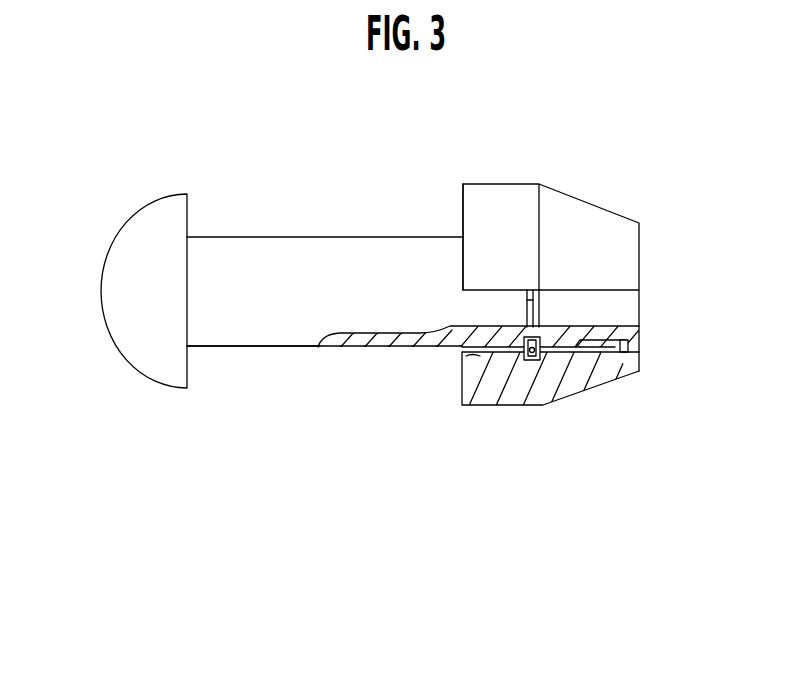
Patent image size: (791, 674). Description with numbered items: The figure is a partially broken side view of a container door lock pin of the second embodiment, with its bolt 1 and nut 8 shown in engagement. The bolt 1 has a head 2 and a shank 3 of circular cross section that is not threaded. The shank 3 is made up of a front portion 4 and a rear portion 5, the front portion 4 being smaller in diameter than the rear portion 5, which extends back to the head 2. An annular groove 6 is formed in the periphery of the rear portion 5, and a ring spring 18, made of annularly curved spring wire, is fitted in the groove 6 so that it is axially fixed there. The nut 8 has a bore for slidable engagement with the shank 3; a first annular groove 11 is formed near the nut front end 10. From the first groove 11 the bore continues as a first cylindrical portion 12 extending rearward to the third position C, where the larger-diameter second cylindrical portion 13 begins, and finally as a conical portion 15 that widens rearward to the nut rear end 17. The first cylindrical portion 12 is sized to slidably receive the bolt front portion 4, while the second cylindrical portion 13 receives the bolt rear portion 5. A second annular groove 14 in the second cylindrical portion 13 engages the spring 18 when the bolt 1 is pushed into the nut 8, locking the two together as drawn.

The bolt 1 is at (233, 374).
The head 2 is at (132, 268).
The shank 3 is at (283, 248).
The front portion 4 is at (625, 335).
The rear portion 5 is at (342, 347).
The annular groove 6 is at (540, 305).
The nut 8 is at (474, 166).
The nut front end 10 is at (615, 347).
The first annular groove 11 is at (632, 350).
The first cylindrical portion 12 is at (632, 352).
The second cylindrical portion 13 is at (490, 375).
The second annular groove 14 is at (530, 362).
The conical portion 15 is at (478, 357).
The nut rear end 17 is at (462, 205).
The ring spring 18 is at (531, 302).
The third position C is at (595, 353).